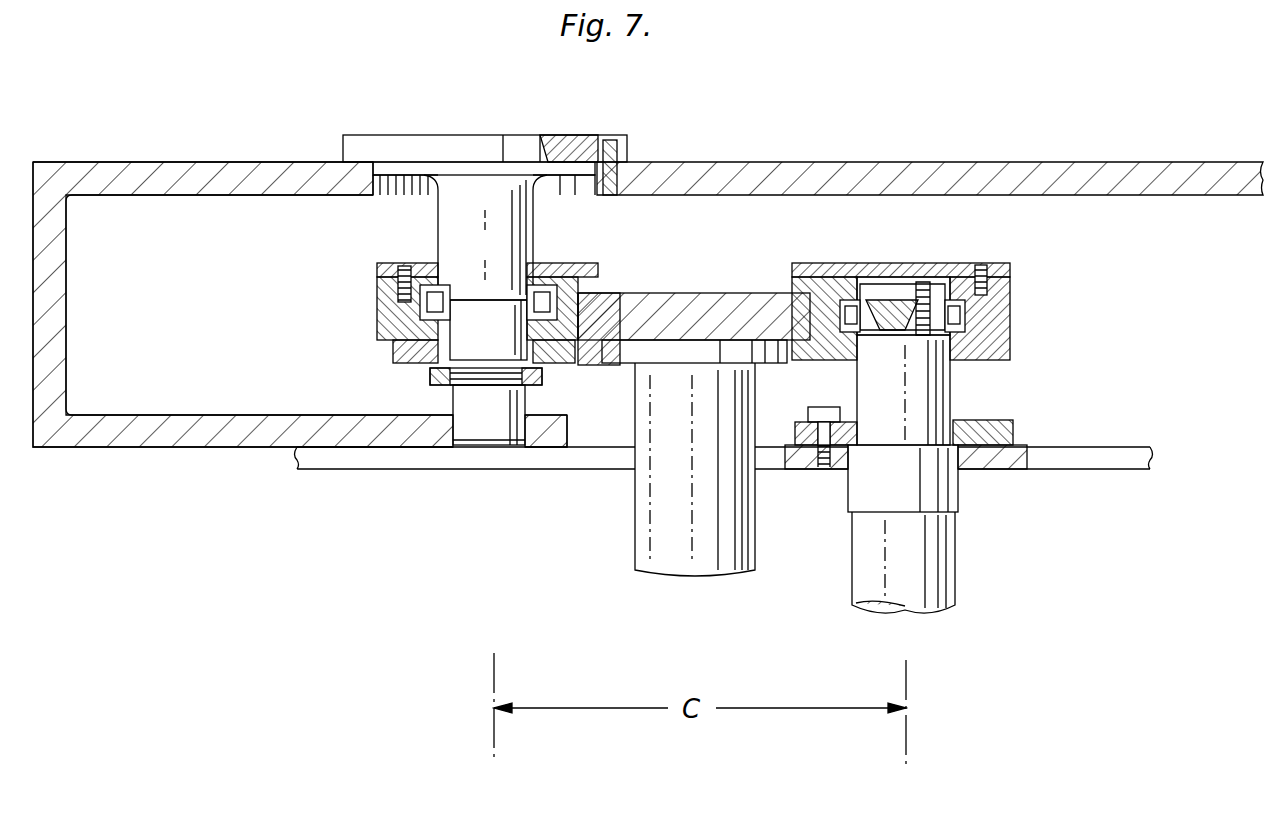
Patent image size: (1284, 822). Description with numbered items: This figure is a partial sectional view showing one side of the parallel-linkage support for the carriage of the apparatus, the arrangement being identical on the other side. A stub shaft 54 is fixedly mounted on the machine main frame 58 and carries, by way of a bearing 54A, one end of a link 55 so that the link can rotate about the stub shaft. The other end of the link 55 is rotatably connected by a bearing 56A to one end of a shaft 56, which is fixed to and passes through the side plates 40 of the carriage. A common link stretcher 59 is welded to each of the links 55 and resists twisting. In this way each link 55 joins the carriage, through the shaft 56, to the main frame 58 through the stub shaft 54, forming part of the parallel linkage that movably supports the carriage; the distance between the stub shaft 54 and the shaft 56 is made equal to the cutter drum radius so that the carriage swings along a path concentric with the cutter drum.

The side plate 40 is at (1127, 455).
The stub shaft 54 is at (448, 226).
The bearing 54A is at (580, 267).
The link 55 is at (683, 302).
The shaft 56 is at (927, 400).
The bearing 56A is at (1005, 313).
The machine main frame 58 is at (848, 168).
The link stretcher 59 is at (667, 486).